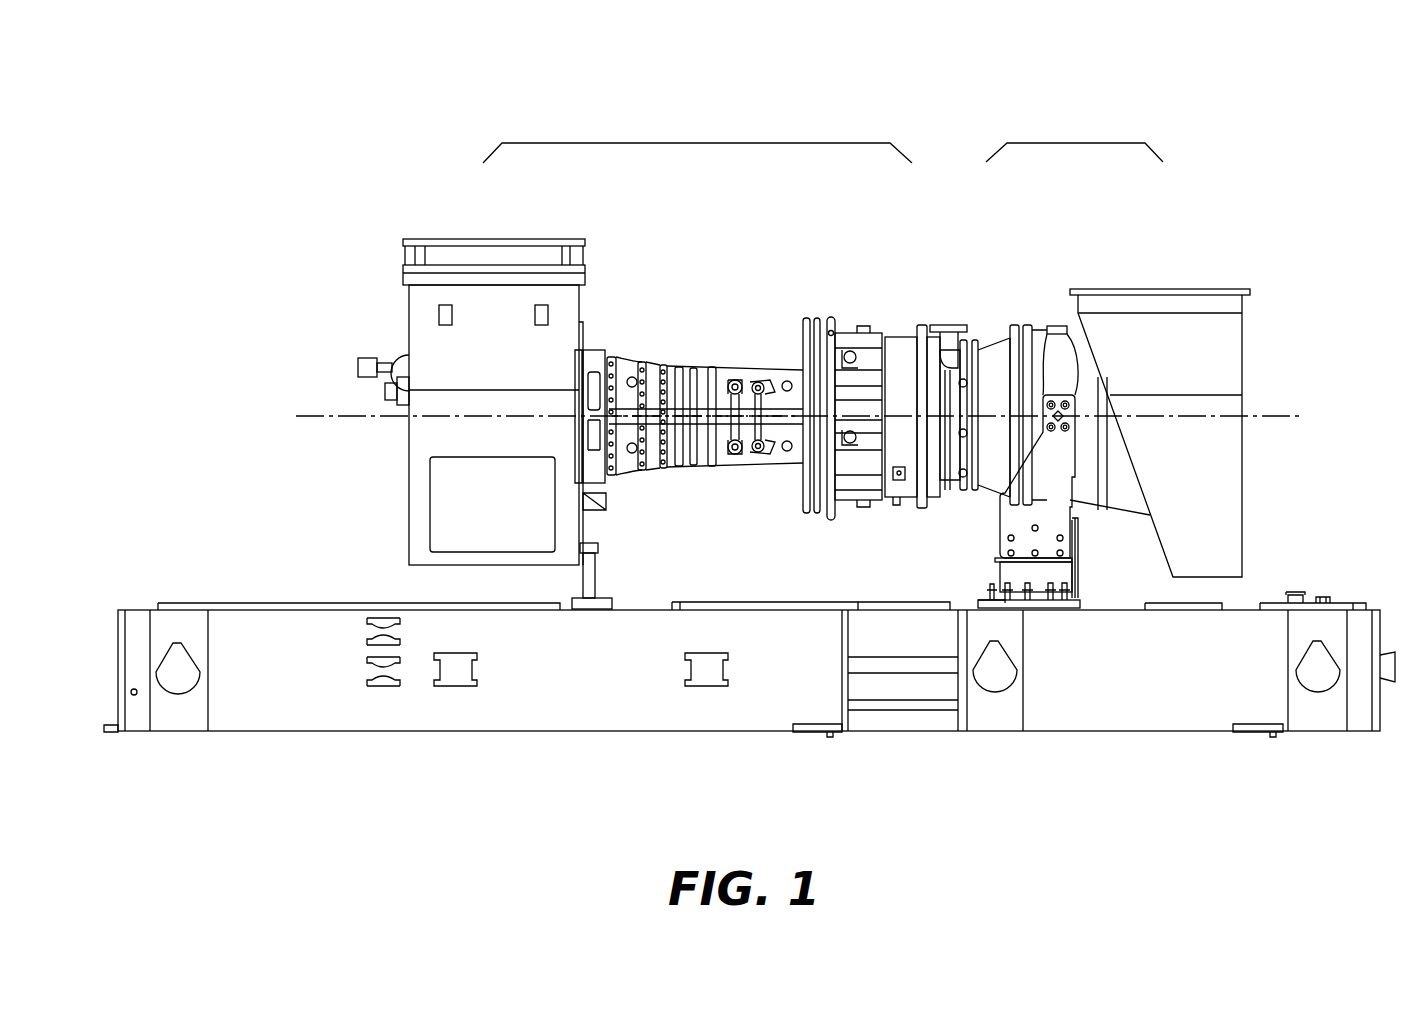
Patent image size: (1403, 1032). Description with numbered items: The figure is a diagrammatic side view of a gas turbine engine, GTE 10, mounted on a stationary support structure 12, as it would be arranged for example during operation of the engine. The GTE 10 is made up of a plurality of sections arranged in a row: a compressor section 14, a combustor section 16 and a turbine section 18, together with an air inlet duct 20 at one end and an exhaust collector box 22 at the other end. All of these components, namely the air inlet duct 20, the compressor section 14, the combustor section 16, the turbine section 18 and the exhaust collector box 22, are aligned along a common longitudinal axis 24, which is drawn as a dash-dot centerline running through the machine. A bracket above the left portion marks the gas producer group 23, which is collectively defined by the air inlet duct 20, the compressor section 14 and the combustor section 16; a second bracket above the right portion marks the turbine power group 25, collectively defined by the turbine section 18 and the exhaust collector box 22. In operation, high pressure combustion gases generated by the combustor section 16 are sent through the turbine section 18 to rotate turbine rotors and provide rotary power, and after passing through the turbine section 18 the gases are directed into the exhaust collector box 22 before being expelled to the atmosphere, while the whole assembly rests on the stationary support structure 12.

The GTE 10 is at (862, 106).
The stationary support structure 12 is at (297, 718).
The compressor section 14 is at (737, 368).
The combustor section 16 is at (892, 338).
The turbine section 18 is at (1050, 393).
The air inlet duct 20 is at (527, 239).
The exhaust collector box 22 is at (1112, 300).
The gas producer group 23 is at (690, 143).
The longitudinal axis 24 is at (330, 414).
The turbine power group 25 is at (1068, 143).